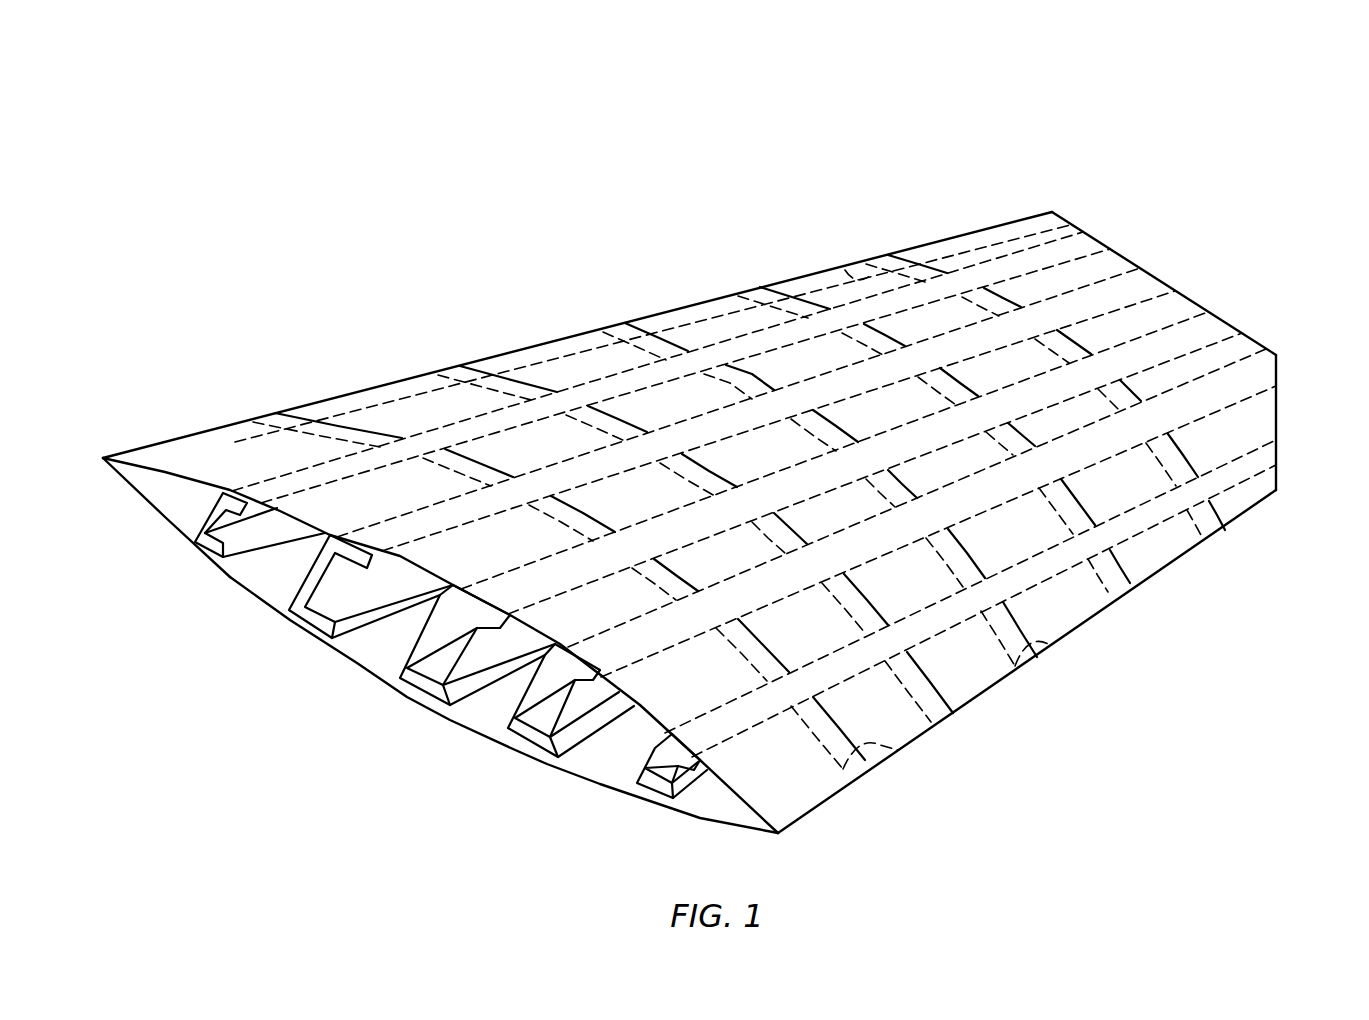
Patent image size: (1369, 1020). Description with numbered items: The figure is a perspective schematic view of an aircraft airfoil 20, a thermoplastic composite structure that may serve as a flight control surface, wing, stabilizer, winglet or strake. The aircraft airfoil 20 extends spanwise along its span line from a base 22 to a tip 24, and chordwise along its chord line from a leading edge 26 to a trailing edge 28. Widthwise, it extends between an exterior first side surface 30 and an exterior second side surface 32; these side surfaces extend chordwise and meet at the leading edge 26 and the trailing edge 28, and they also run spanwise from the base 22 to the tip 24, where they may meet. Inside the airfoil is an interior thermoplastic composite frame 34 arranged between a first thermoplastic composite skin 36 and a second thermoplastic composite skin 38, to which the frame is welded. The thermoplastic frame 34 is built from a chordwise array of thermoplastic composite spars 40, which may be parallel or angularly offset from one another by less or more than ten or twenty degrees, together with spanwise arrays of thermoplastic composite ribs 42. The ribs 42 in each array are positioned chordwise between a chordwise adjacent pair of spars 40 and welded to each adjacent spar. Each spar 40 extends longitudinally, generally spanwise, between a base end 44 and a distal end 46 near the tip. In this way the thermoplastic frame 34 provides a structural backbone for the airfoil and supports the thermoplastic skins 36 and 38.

The aircraft airfoil 20 is at (1142, 148).
The base 22 is at (447, 725).
The tip 24 is at (1183, 295).
The leading edge 26 is at (514, 351).
The trailing edge 28 is at (991, 690).
The exterior first side surface 30 is at (205, 460).
The exterior second side surface 32 is at (160, 507).
The thermoplastic composite frame 34 is at (287, 584).
The first thermoplastic composite skin 36 is at (277, 454).
The second thermoplastic composite skin 38 is at (128, 494).
The thermoplastic composite spar 40 is at (946, 333).
The thermoplastic composite rib 42 is at (850, 272).
The base end 44 is at (530, 748).
The distal end 46 is at (1283, 362).